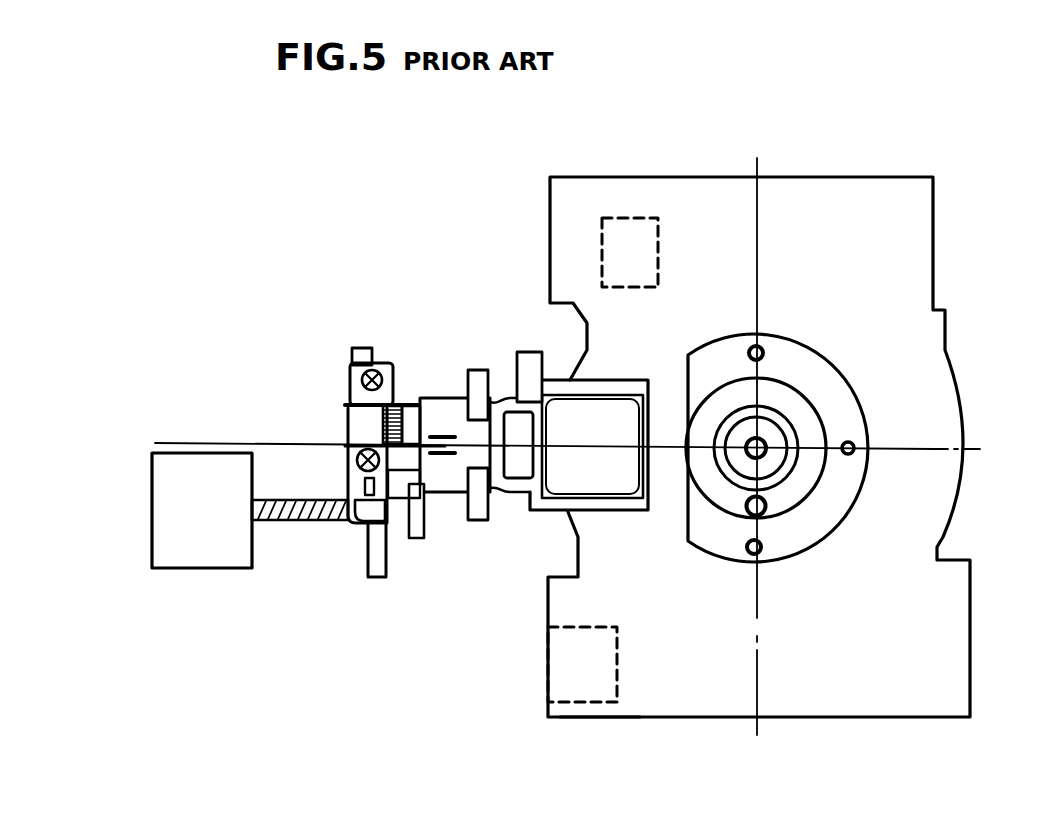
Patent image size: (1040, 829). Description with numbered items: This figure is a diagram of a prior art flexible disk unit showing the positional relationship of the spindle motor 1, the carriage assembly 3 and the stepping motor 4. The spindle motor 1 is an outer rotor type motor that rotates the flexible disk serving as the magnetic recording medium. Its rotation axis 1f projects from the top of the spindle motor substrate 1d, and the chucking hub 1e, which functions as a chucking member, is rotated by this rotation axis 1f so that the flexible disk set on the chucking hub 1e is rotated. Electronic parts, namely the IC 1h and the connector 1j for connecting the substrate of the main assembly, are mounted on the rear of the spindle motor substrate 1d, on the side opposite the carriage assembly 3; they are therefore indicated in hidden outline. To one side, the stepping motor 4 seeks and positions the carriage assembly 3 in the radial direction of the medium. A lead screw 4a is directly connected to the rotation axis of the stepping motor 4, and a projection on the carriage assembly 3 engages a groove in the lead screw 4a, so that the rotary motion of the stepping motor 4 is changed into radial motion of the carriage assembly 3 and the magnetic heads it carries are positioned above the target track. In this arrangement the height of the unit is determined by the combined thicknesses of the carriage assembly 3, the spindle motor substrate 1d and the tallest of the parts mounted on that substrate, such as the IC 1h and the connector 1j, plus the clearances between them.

The spindle motor 1 is at (549, 608).
The spindle motor substrate 1d is at (597, 717).
The chucking hub 1e is at (805, 428).
The rotation axis 1f is at (768, 450).
The IC 1h is at (601, 247).
The connector 1j is at (542, 685).
The carriage assembly 3 is at (350, 362).
The stepping motor 4 is at (170, 568).
The lead screw 4a is at (303, 522).